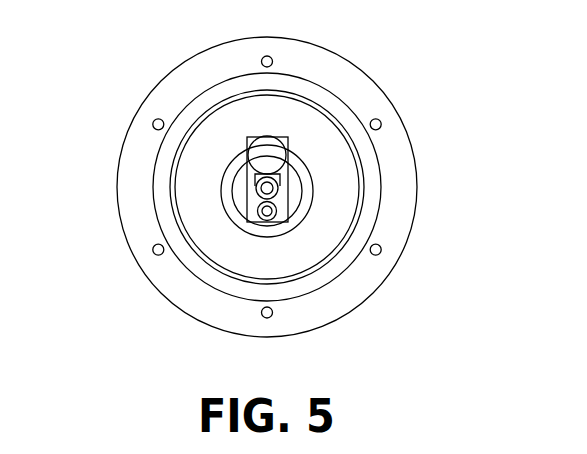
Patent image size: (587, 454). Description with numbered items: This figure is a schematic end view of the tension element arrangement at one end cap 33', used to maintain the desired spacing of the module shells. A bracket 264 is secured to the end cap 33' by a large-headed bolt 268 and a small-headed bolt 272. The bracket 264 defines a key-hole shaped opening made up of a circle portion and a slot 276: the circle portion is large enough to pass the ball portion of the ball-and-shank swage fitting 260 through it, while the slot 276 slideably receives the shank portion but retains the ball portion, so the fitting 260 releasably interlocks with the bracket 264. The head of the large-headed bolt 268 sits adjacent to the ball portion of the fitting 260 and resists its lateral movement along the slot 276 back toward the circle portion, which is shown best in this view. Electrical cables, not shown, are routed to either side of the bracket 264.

The end cap 33' is at (303, 187).
The ball-and-shank swage fitting 260 is at (280, 189).
The bracket 264 is at (246, 198).
The large-headed bolt 268 is at (278, 152).
The small-headed bolt 272 is at (262, 218).
The slot 276 is at (248, 168).